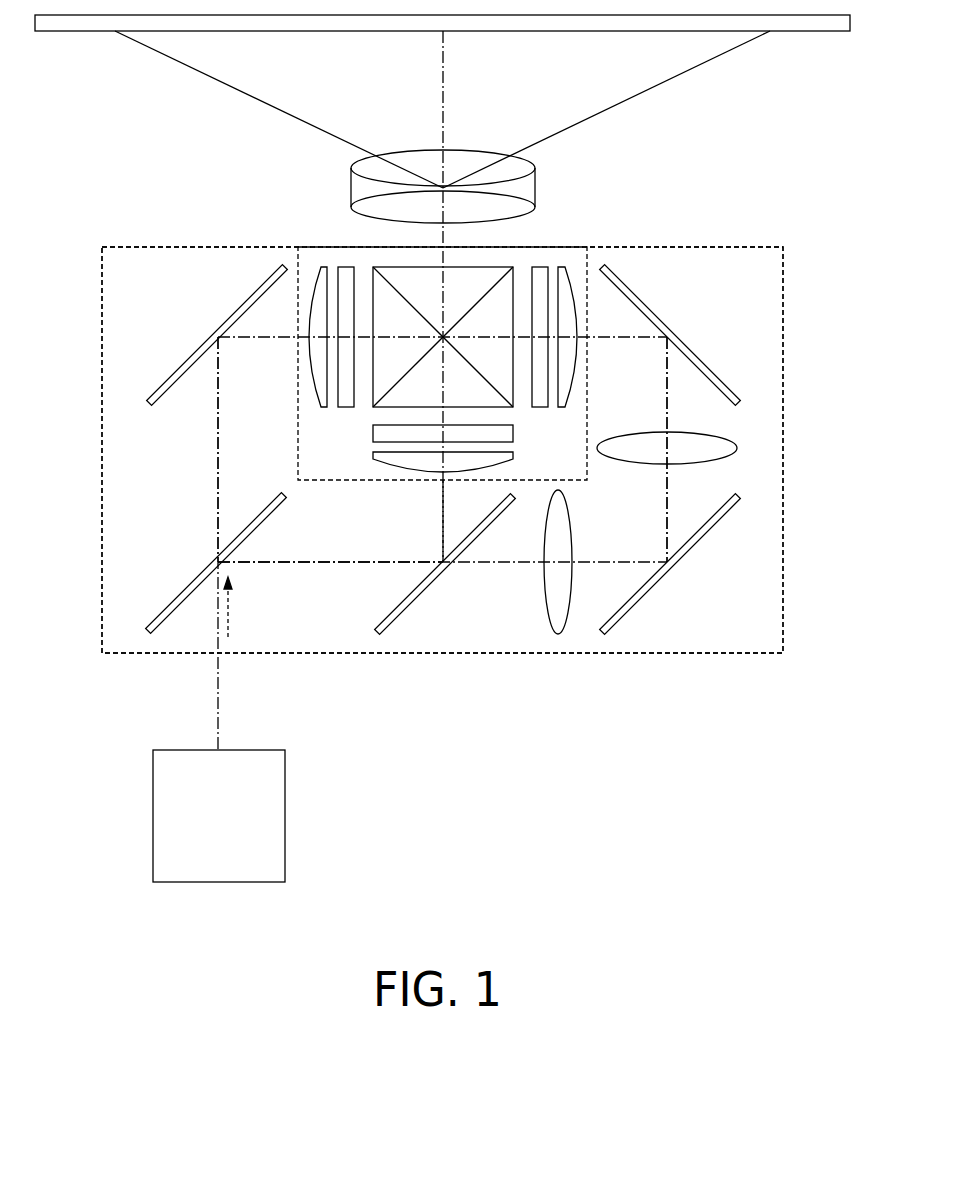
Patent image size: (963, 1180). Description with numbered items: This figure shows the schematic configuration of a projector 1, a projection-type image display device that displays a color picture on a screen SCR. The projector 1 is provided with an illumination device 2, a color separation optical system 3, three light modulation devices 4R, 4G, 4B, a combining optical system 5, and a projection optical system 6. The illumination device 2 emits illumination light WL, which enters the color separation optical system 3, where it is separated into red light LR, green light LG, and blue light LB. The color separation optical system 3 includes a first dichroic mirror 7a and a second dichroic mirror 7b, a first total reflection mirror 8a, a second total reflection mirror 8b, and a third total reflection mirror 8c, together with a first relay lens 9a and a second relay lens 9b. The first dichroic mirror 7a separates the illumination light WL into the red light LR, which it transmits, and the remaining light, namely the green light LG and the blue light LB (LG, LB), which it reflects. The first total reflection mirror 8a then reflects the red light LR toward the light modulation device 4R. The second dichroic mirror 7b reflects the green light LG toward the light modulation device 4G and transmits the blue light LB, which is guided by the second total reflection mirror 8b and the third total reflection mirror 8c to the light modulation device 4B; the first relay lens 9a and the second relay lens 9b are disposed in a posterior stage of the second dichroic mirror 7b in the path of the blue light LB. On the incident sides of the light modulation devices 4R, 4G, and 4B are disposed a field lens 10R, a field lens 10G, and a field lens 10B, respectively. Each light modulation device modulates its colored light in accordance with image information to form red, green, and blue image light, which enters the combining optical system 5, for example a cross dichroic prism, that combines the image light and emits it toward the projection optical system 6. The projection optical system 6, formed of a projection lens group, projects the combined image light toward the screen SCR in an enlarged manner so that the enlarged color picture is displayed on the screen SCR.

The projector 1 is at (795, 221).
The illumination device 2 is at (285, 778).
The color separation optical system 3 is at (102, 396).
The light modulation device 4R is at (345, 266).
The light modulation device 4G is at (380, 433).
The light modulation device 4B is at (540, 266).
The combining optical system 5 is at (457, 273).
The projection optical system 6 is at (423, 162).
The first dichroic mirror 7a is at (180, 597).
The second dichroic mirror 7b is at (420, 597).
The first total reflection mirror 8a is at (194, 352).
The second total reflection mirror 8b is at (695, 548).
The third total reflection mirror 8c is at (698, 353).
The first relay lens 9a is at (545, 583).
The second relay lens 9b is at (722, 437).
The field lens 10R is at (322, 266).
The field lens 10G is at (380, 455).
The field lens 10B is at (560, 266).
The screen SCR is at (815, 32).
The illumination light WL is at (232, 612).
The red light LR is at (218, 470).
The green light LG is at (443, 520).
The blue light LB is at (667, 508).
The green and blue light LG, LB is at (288, 563).